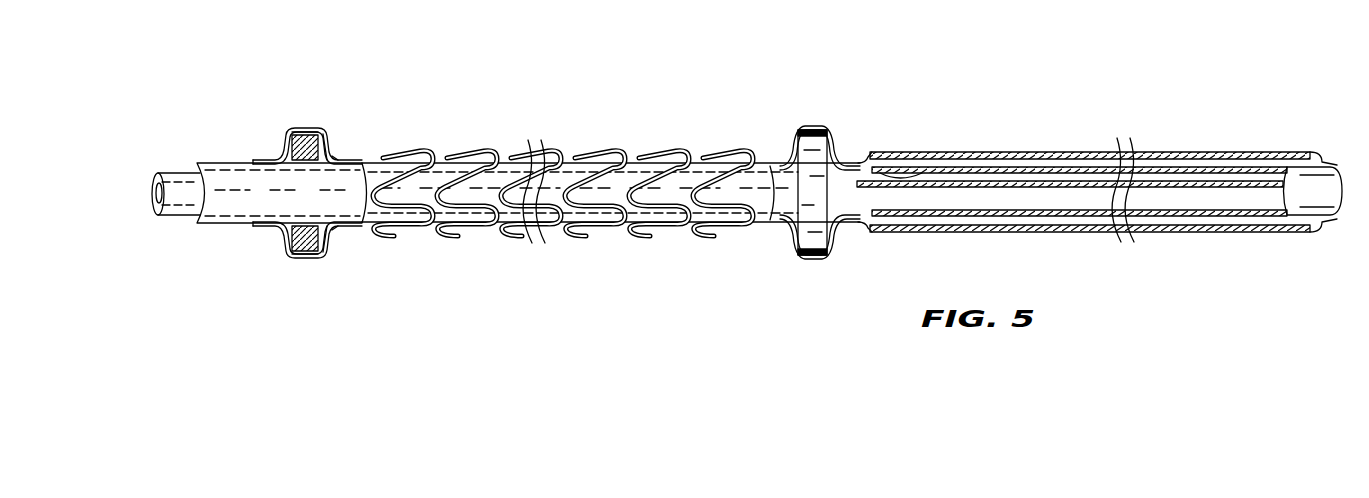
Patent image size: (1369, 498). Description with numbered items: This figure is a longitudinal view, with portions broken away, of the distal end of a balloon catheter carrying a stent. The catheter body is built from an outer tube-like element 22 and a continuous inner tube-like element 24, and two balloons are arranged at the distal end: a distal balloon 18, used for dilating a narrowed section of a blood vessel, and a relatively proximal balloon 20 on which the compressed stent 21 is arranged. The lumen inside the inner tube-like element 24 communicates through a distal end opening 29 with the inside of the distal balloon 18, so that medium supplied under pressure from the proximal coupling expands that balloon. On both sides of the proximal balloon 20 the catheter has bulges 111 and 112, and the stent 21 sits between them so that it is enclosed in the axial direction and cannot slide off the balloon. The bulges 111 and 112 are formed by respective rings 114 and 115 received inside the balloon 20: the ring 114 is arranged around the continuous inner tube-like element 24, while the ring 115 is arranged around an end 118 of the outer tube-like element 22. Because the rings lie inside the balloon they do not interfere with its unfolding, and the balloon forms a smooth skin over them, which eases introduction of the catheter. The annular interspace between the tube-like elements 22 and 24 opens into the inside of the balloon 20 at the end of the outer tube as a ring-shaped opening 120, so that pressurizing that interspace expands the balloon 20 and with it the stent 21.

The distal balloon 18 is at (1080, 152).
The proximal balloon 20 is at (735, 212).
The stent 21 is at (606, 145).
The outer tube-like element 22 is at (180, 187).
The inner tube-like element 24 is at (218, 222).
The distal end opening 29 is at (895, 172).
The bulge 111 is at (810, 127).
The bulge 112 is at (310, 127).
The ring 114 is at (810, 232).
The ring 115 is at (284, 131).
The end of the outer tube-like element 118 is at (336, 163).
The ring-shaped opening 120 is at (333, 160).